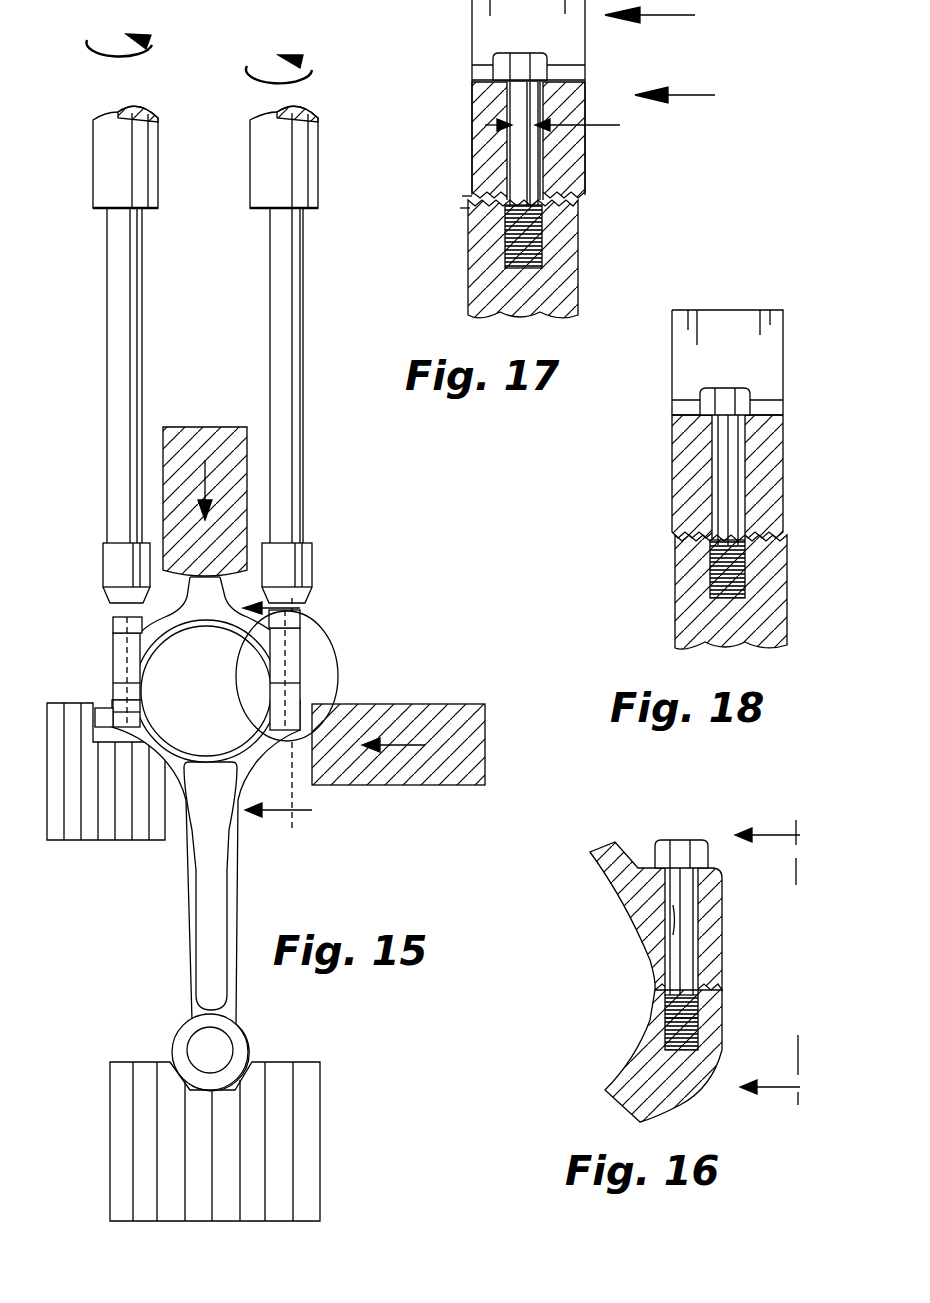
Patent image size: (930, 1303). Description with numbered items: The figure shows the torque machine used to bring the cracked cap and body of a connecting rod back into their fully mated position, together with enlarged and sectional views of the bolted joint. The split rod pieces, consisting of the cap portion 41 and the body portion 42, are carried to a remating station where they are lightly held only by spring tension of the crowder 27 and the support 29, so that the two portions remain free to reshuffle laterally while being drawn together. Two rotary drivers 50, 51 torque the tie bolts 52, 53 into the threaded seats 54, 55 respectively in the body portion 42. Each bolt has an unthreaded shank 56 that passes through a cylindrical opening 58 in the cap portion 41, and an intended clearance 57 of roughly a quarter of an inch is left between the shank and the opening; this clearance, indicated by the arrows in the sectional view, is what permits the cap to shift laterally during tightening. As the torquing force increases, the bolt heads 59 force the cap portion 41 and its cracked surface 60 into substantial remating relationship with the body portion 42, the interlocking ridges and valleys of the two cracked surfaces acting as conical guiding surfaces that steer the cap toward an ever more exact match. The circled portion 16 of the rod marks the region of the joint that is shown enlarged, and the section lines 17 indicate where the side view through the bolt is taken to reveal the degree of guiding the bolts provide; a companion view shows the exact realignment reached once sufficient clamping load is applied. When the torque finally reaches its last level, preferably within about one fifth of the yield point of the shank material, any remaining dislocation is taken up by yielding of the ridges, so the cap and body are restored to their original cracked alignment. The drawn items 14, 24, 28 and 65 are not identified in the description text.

In FIG. 15, the piston pin / small end bore 14 is at (248, 1040).
In FIG. 15, the circled portion 16 is at (378, 658).
In FIG. 16, the section lines 17— 17 is at (794, 966).
In FIG. 15, the support block 24 is at (305, 1100).
In FIG. 15, the crowder 27 is at (198, 455).
In FIG. 15, the side support block 28 is at (84, 728).
In FIG. 15, the support 29 is at (455, 720).
In FIG. 15, the cap portion 41 is at (207, 612).
In FIG. 17, the cap portion 41 is at (487, 155).
In FIG. 18, the cap portion 41 is at (690, 445).
In FIG. 16, the cap portion 41 is at (705, 900).
In FIG. 15, the body portion 42 is at (238, 873).
In FIG. 17, the body portion 42 is at (568, 268).
In FIG. 18, the body portion 42 is at (700, 615).
In FIG. 16, the body portion 42 is at (705, 1048).
In FIG. 15, the rotary driver 50 is at (108, 392).
In FIG. 15, the rotary driver 51 is at (303, 360).
In FIG. 15, the tie bolt 52 is at (118, 665).
In FIG. 15, the tie bolt 53 is at (312, 650).
In FIG. 15, the threaded seat 54 is at (120, 715).
In FIG. 16, the threaded seat 55 is at (665, 1018).
In FIG. 17, the unthreaded shank 56 is at (524, 143).
In FIG. 18, the unthreaded shank 56 is at (735, 480).
In FIG. 16, the unthreaded shank 56 is at (688, 955).
In FIG. 17, the clearance 57 is at (620, 125).
In FIG. 17, the cylindrical opening 58 is at (545, 178).
In FIG. 16, the cylindrical opening 58 is at (670, 920).
In FIG. 17, the bolt head 59 is at (550, 57).
In FIG. 18, the bolt head 59 is at (720, 390).
In FIG. 16, the bolt head 59 is at (720, 805).
In FIG. 17, the cracked surface 60 is at (465, 200).
In FIG. 17, the mating face of rod body 65 is at (463, 210).